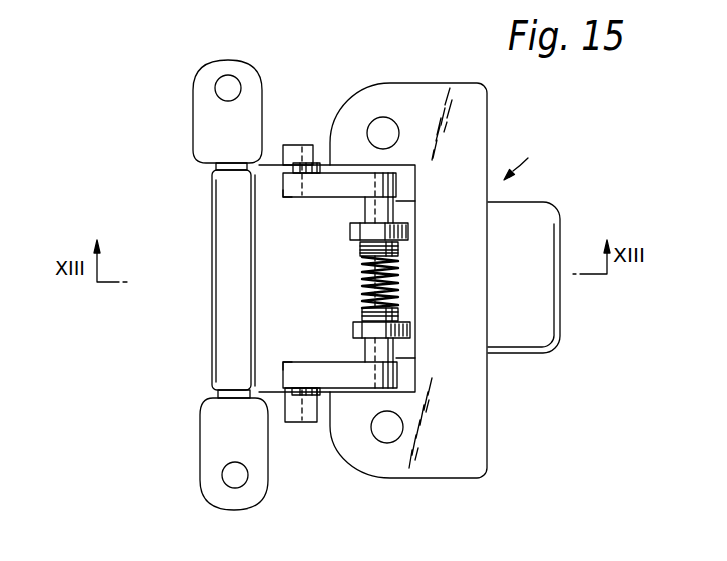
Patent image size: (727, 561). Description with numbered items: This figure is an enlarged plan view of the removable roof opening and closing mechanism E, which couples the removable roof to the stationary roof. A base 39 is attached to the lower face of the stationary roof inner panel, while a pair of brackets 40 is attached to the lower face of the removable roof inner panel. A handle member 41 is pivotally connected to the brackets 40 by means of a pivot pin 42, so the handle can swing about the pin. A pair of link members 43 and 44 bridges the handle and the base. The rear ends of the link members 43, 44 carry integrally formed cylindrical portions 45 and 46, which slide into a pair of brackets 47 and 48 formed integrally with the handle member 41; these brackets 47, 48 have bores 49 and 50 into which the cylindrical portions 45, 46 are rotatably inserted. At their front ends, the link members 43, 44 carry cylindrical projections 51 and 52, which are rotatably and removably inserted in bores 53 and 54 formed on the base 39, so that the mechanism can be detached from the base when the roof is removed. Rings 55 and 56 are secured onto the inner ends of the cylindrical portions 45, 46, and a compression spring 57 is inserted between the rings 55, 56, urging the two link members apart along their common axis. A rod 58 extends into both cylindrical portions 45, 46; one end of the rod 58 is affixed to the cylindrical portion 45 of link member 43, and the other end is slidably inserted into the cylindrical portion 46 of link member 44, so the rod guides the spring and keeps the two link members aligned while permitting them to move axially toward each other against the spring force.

The base 39 is at (478, 122).
The brackets 40 is at (205, 130).
The handle member 41 is at (548, 332).
The pivot pin 42 is at (214, 172).
The link member 43 is at (332, 185).
The link member 44 is at (333, 381).
The cylindrical portion 45 is at (397, 212).
The cylindrical portion 46 is at (393, 362).
The bracket 47 is at (356, 231).
The bracket 48 is at (355, 329).
The bore 49 is at (363, 244).
The bore 50 is at (363, 320).
The cylindrical projection 51 is at (305, 150).
The cylindrical projection 52 is at (305, 424).
The bore 53 is at (286, 191).
The bore 54 is at (298, 367).
The ring 55 is at (392, 252).
The ring 56 is at (393, 316).
The compression spring 57 is at (391, 270).
The rod 58 is at (364, 278).
The removable roof opening and closing mechanism E is at (524, 160).